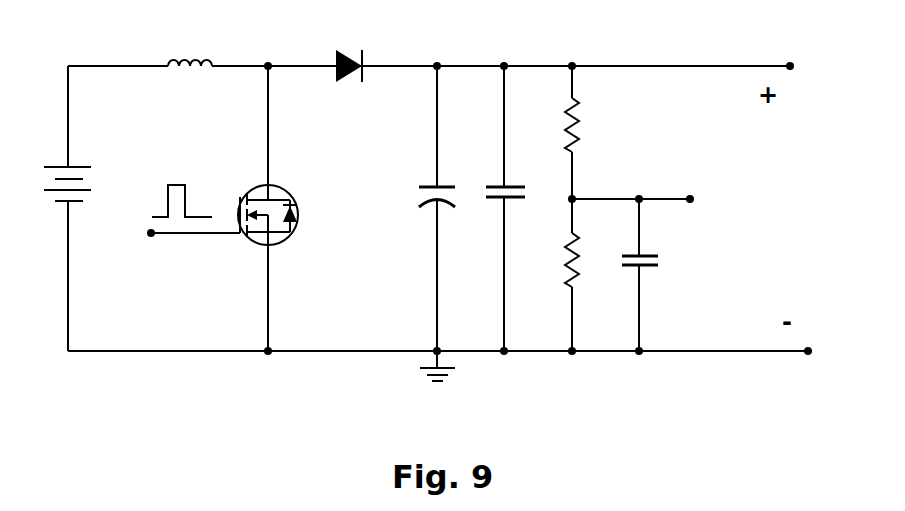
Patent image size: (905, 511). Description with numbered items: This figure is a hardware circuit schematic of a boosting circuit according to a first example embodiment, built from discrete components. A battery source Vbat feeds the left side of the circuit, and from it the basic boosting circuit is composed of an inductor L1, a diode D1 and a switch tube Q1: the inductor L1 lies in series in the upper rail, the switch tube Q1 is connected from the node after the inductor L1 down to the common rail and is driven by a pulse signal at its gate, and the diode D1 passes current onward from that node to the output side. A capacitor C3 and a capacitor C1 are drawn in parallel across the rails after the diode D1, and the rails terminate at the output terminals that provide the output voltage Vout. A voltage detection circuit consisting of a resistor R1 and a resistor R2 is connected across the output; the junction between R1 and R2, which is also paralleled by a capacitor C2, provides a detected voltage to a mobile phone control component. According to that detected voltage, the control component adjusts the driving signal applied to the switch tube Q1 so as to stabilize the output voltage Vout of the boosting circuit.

The inductor L1 is at (190, 49).
The diode D1 is at (351, 53).
The switch tube Q1 is at (284, 215).
The battery voltage source Vbat is at (94, 181).
The electrolytic capacitor C3 is at (453, 208).
The capacitor C1 is at (520, 208).
The resistor R1 is at (589, 132).
The resistor R2 is at (589, 275).
The capacitor C2 is at (655, 275).
The output voltage Vout is at (749, 208).